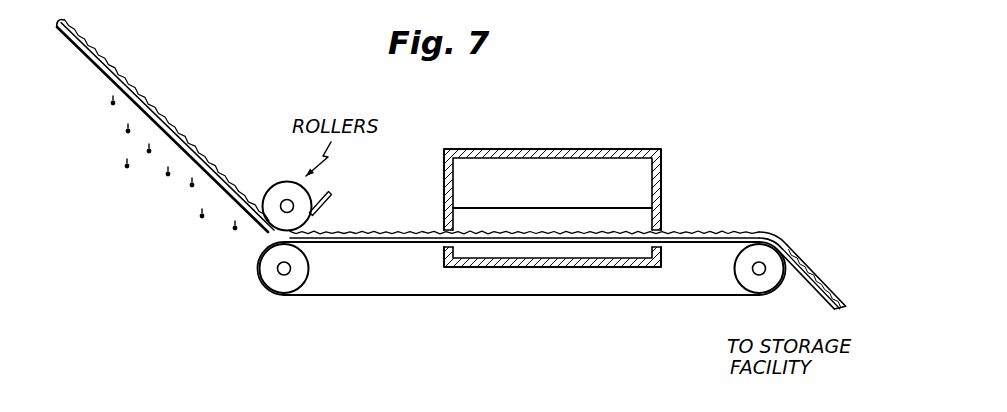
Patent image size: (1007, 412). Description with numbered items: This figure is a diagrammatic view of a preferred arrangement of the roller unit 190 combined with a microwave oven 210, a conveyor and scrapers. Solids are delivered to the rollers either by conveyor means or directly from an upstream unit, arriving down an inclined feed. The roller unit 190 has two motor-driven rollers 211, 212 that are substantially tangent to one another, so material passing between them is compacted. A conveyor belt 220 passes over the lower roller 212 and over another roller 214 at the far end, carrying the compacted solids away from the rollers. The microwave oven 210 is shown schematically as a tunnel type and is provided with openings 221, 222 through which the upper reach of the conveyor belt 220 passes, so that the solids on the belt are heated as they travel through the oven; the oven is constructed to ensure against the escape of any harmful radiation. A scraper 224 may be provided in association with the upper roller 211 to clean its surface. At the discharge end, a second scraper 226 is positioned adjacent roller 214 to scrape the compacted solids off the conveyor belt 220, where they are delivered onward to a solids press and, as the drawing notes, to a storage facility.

The roller unit 190 is at (247, 289).
The microwave oven 210 is at (594, 150).
The roller 211 is at (274, 190).
The roller 212 is at (304, 268).
The roller 214 is at (762, 253).
The conveyor belt 220 is at (712, 233).
The opening 221 is at (441, 247).
The opening 222 is at (662, 213).
The scraper 224 is at (320, 211).
The scraper 226 is at (833, 284).